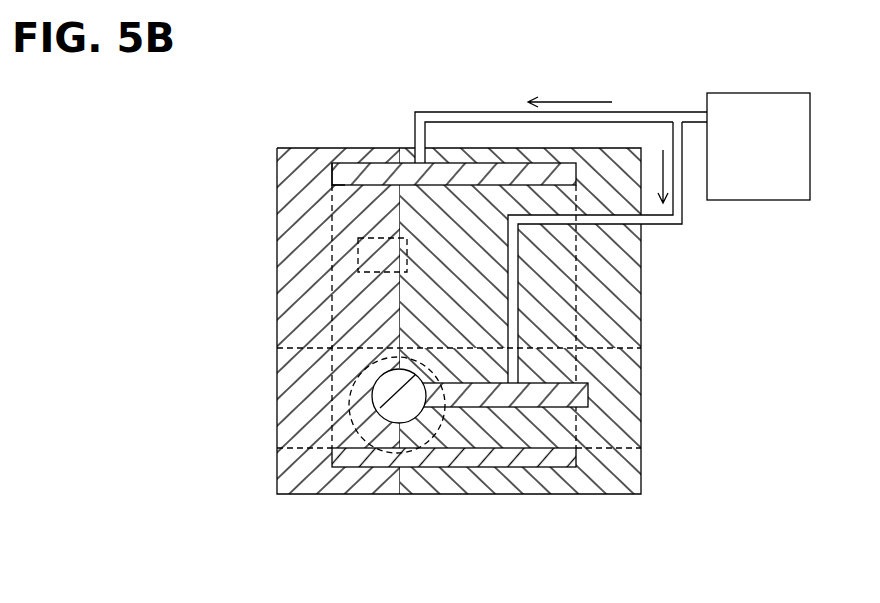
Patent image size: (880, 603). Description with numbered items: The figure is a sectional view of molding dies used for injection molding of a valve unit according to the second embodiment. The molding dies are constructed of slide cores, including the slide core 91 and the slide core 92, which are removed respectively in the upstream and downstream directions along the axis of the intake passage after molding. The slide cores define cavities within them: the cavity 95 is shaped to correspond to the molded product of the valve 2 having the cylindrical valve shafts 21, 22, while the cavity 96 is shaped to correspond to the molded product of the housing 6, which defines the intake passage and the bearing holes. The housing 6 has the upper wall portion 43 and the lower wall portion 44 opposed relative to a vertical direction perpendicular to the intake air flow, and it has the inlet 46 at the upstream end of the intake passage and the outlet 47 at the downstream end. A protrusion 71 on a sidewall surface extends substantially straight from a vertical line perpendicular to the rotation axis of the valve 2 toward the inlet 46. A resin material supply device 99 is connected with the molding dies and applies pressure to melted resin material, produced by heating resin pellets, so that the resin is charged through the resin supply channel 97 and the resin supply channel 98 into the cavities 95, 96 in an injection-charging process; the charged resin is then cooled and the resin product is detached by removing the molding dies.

The valve 2 is at (490, 403).
The housing 6 is at (454, 129).
The upper wall portion 43 is at (373, 172).
The valve shaft 21 is at (390, 474).
The valve shaft 22 is at (385, 420).
The lower wall portion 44 is at (428, 455).
The inlet 46 is at (335, 318).
The outlet 47 is at (578, 294).
The protrusion 71 is at (358, 258).
The slide core 91 is at (306, 479).
The slide core 92 is at (524, 478).
The cavity 95 is at (588, 405).
The cavity 96 is at (342, 178).
The resin supply channel 97 is at (509, 112).
The resin supply channel 98 is at (676, 217).
The resin material supply device 99 is at (765, 167).